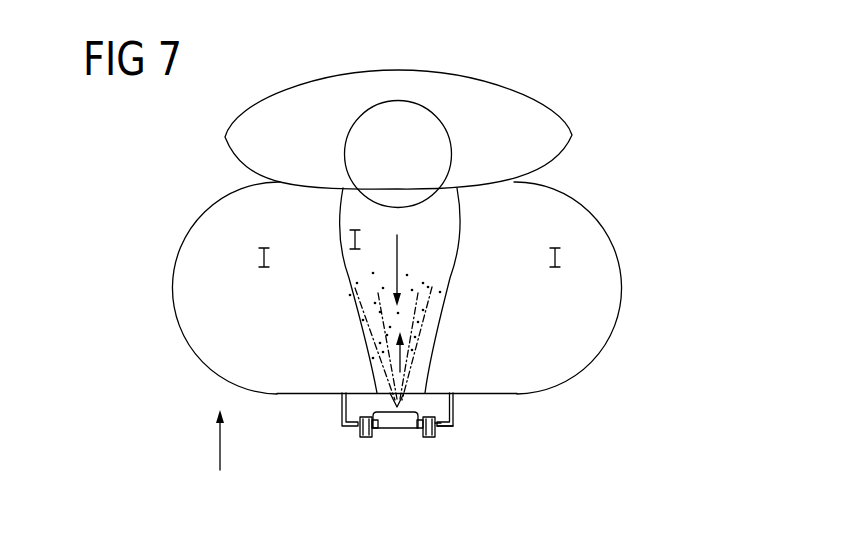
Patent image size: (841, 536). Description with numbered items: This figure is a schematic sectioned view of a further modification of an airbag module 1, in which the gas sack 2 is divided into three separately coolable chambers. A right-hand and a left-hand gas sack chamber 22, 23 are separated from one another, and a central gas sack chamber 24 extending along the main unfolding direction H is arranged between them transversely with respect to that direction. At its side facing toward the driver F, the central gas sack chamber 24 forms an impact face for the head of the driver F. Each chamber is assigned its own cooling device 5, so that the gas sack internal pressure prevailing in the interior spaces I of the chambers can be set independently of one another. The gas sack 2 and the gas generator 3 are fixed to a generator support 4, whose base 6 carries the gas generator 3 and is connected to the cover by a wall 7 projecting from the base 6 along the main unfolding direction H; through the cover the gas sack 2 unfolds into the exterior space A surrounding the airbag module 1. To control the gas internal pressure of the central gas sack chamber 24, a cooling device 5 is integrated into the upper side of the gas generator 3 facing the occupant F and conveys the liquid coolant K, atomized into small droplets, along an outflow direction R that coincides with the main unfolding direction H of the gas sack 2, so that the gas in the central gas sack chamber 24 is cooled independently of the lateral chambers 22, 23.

The airbag module 1 is at (143, 370).
The gas sack 2 is at (421, 269).
The gas generator 3 is at (407, 428).
The generator support 4 is at (453, 427).
The cooling device 5 is at (359, 447).
The base 6 is at (443, 430).
The wall 7 is at (340, 409).
The left-hand gas sack chamber 22 is at (223, 220).
The right-hand gas sack chamber 23 is at (590, 235).
The central gas sack chamber 24 is at (448, 233).
The driver F is at (500, 93).
The exterior space A is at (134, 310).
The coolant K is at (395, 320).
The outflow direction R is at (410, 354).
The main unfolding direction H is at (233, 440).
The interior space I is at (409, 248).